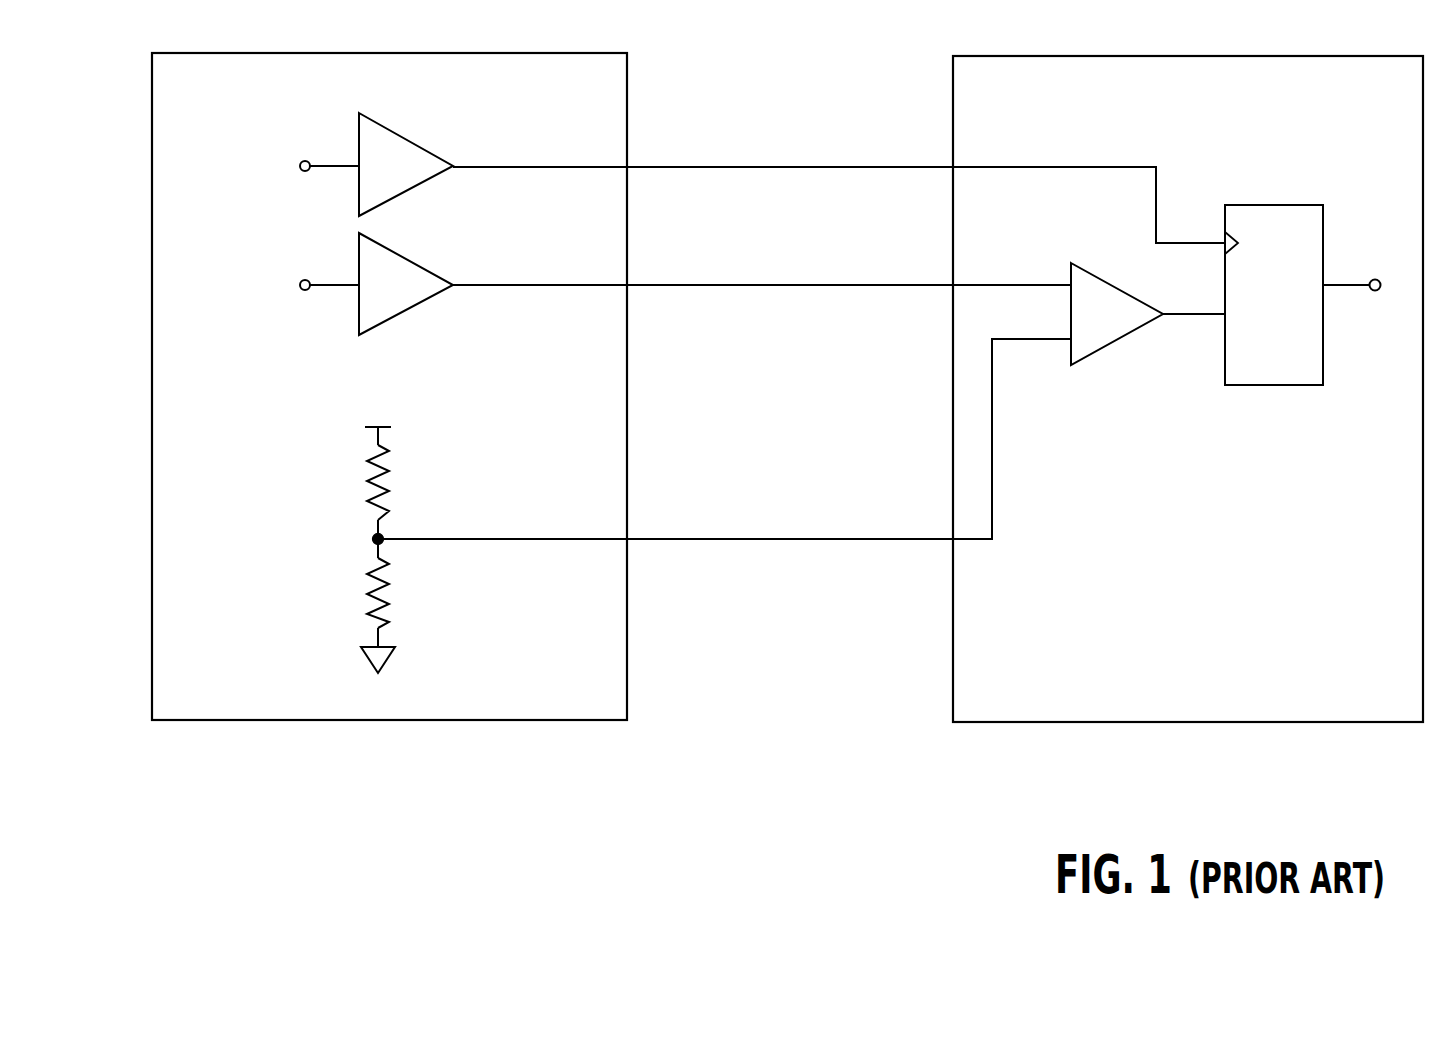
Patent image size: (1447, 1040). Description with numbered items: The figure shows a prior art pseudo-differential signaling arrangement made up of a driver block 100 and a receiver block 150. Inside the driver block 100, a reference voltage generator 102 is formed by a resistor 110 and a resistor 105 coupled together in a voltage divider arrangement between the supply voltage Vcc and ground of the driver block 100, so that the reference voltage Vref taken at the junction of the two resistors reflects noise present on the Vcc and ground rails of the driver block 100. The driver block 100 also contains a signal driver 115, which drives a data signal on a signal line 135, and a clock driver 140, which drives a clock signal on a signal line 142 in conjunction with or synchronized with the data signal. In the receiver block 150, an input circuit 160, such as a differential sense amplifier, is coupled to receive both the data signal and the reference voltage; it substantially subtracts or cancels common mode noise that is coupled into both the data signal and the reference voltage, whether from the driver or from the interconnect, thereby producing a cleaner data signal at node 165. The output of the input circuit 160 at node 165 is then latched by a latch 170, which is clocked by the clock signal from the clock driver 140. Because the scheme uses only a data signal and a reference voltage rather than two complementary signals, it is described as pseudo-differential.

The driver block 100 is at (581, 698).
The reference voltage generator 102 is at (354, 550).
The resistor 105 is at (401, 587).
The resistor 110 is at (401, 483).
The signal driver 115 is at (401, 300).
The signal line 135 is at (738, 286).
The clock driver 140 is at (401, 181).
The signal line 142 is at (738, 168).
The receiver block 150 is at (1390, 702).
The input circuit 160 is at (1113, 335).
The node 165 is at (1193, 318).
The latch 170 is at (1307, 360).